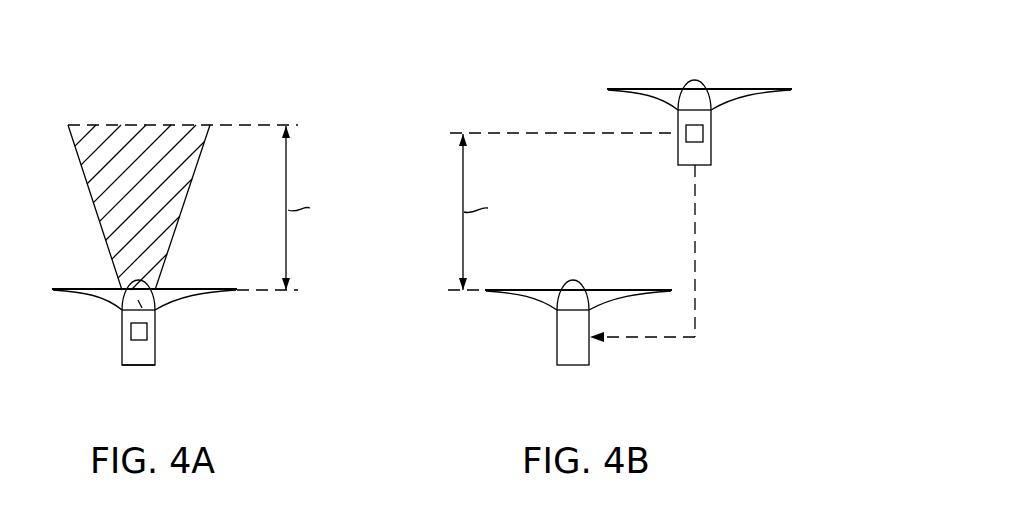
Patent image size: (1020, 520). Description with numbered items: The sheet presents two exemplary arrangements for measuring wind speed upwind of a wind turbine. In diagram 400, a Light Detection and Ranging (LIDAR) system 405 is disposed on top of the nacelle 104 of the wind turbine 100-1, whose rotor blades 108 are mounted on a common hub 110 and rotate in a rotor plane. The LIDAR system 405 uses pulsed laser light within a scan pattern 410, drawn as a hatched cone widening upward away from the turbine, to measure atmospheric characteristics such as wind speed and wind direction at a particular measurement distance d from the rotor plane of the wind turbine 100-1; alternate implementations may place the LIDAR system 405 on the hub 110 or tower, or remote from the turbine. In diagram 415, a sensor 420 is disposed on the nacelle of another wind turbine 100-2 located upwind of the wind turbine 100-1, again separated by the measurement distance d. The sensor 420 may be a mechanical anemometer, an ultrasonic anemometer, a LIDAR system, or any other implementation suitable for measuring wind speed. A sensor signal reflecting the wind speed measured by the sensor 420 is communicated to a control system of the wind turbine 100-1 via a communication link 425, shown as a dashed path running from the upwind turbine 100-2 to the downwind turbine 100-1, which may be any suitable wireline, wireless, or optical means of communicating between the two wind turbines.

In FIG. 4A, the diagram 400 is at (265, 108).
In FIG. 4A, the scan pattern 410 is at (120, 212).
In FIG. 4A, the wind turbine 100-1 is at (145, 352).
In FIG. 4B, the wind turbine 100-1 is at (581, 374).
In FIG. 4B, the another wind turbine 100-2 is at (700, 153).
In FIG. 4A, the rotor blades 108 is at (70, 293).
In FIG. 4A, the hub 110 is at (140, 302).
In FIG. 4A, the LIDAR system 405 is at (131, 337).
In FIG. 4A, the nacelle 104 is at (130, 366).
In FIG. 4B, the diagram 415 is at (742, 65).
In FIG. 4B, the sensor 420 is at (703, 134).
In FIG. 4B, the communication link 425 is at (697, 265).